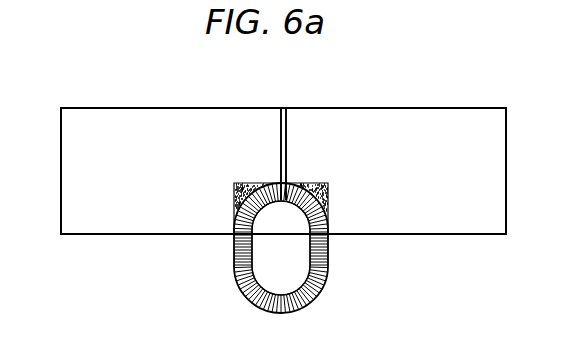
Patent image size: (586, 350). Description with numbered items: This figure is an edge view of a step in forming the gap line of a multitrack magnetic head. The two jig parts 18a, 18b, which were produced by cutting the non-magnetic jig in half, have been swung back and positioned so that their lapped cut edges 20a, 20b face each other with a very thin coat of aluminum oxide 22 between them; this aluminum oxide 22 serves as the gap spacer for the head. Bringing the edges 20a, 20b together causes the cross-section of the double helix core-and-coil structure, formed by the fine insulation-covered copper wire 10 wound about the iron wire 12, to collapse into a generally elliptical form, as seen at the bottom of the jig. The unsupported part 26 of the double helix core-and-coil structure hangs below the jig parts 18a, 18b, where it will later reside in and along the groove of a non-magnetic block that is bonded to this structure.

The insulation-covered copper wire 10 is at (325, 280).
The iron wire 12 is at (292, 266).
The jig part 18a is at (137, 168).
The jig part 18b is at (452, 168).
The cut edge 20a is at (281, 127).
The cut edge 20b is at (286, 149).
The aluminum oxide 22 is at (283, 108).
The unsupported part of the double helix core-and-coil structure 26 is at (232, 283).